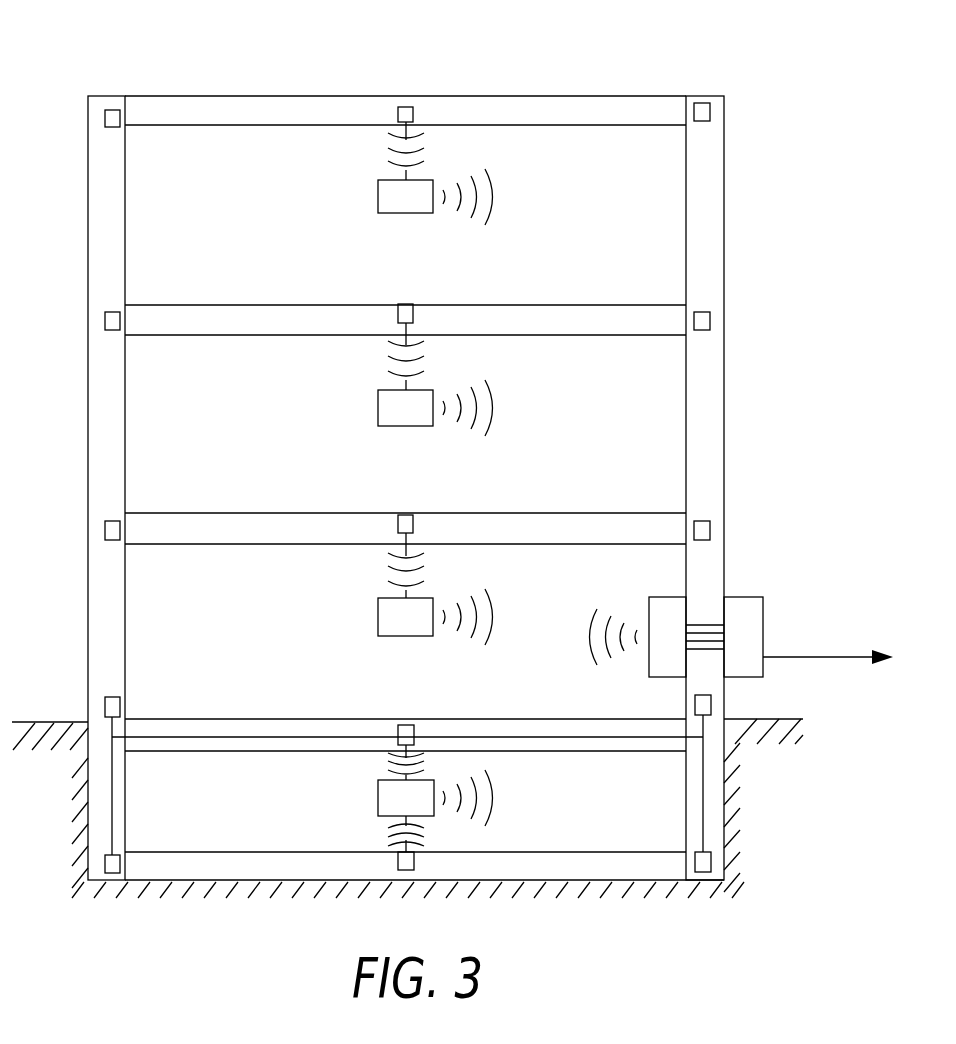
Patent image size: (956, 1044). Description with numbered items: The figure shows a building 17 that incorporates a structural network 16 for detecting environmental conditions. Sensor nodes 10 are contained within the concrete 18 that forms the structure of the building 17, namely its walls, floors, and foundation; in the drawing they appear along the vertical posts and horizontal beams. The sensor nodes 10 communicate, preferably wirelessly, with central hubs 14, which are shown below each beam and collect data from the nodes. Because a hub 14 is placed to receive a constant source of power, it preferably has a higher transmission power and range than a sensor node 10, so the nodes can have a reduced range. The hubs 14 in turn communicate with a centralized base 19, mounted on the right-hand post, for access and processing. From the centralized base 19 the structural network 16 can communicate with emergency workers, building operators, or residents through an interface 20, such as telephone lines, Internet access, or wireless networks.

The sensor node 10 is at (113, 312).
The central hub 14 is at (428, 181).
The structural network 16 is at (113, 72).
The building 17 is at (742, 150).
The concrete 18 is at (710, 412).
The centralized base 19 is at (742, 597).
The interface 20 is at (848, 662).